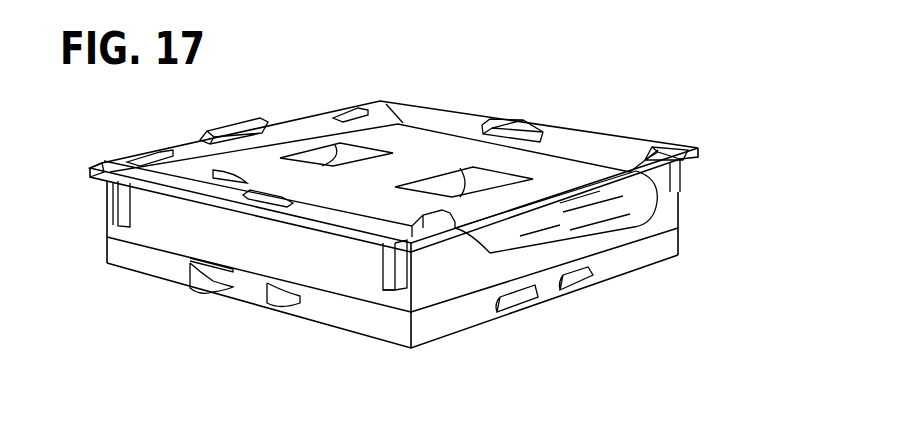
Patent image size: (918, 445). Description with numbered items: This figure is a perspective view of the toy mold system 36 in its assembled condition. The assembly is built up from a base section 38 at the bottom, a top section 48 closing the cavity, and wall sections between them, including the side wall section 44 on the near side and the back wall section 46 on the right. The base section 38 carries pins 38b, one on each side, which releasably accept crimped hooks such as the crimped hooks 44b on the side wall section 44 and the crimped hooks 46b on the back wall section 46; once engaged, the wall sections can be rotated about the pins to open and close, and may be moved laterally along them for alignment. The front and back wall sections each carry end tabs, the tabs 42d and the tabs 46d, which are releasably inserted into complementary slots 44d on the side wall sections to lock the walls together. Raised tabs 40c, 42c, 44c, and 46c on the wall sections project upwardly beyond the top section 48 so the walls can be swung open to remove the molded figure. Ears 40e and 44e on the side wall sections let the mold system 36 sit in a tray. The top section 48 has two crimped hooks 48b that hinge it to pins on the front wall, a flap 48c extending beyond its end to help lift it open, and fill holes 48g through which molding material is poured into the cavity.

The toy mold system 36 is at (728, 112).
The base section 38 is at (636, 262).
The pins 38b is at (244, 274).
The raised tab 40c is at (512, 122).
The ear 40e is at (700, 156).
The raised tab 42c is at (233, 123).
The tabs 42d is at (120, 203).
The side wall section 44 is at (155, 245).
The crimped hooks 44b is at (287, 300).
The raised tab 44c is at (277, 205).
The slots 44d is at (132, 217).
The ear 44e is at (108, 160).
The back wall section 46 is at (443, 297).
The crimped hooks 46b is at (585, 284).
The raised tab 46c is at (653, 150).
The tabs 46d is at (388, 287).
The top section 48 is at (573, 178).
The crimped hooks 48b is at (148, 157).
The flap 48c is at (643, 203).
The fill holes 48g is at (453, 190).